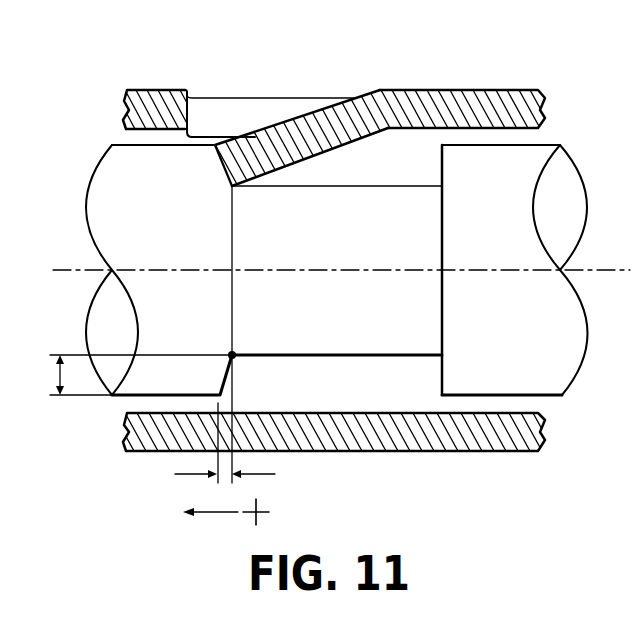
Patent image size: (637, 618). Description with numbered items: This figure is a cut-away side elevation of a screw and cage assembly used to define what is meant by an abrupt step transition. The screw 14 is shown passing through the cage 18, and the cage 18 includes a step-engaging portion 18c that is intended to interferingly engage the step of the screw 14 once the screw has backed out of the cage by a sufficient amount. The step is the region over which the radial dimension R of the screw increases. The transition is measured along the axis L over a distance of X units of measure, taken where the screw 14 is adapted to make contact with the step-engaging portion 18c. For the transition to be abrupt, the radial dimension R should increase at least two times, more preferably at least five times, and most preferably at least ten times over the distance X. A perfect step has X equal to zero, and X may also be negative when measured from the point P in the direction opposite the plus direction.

The screw 14 is at (90, 167).
The cage 18 is at (475, 86).
The step-engaging portion 18c is at (287, 120).
The point P is at (236, 353).
The axis L is at (339, 268).
The radial dimension R is at (44, 375).
The axial distance X is at (234, 477).